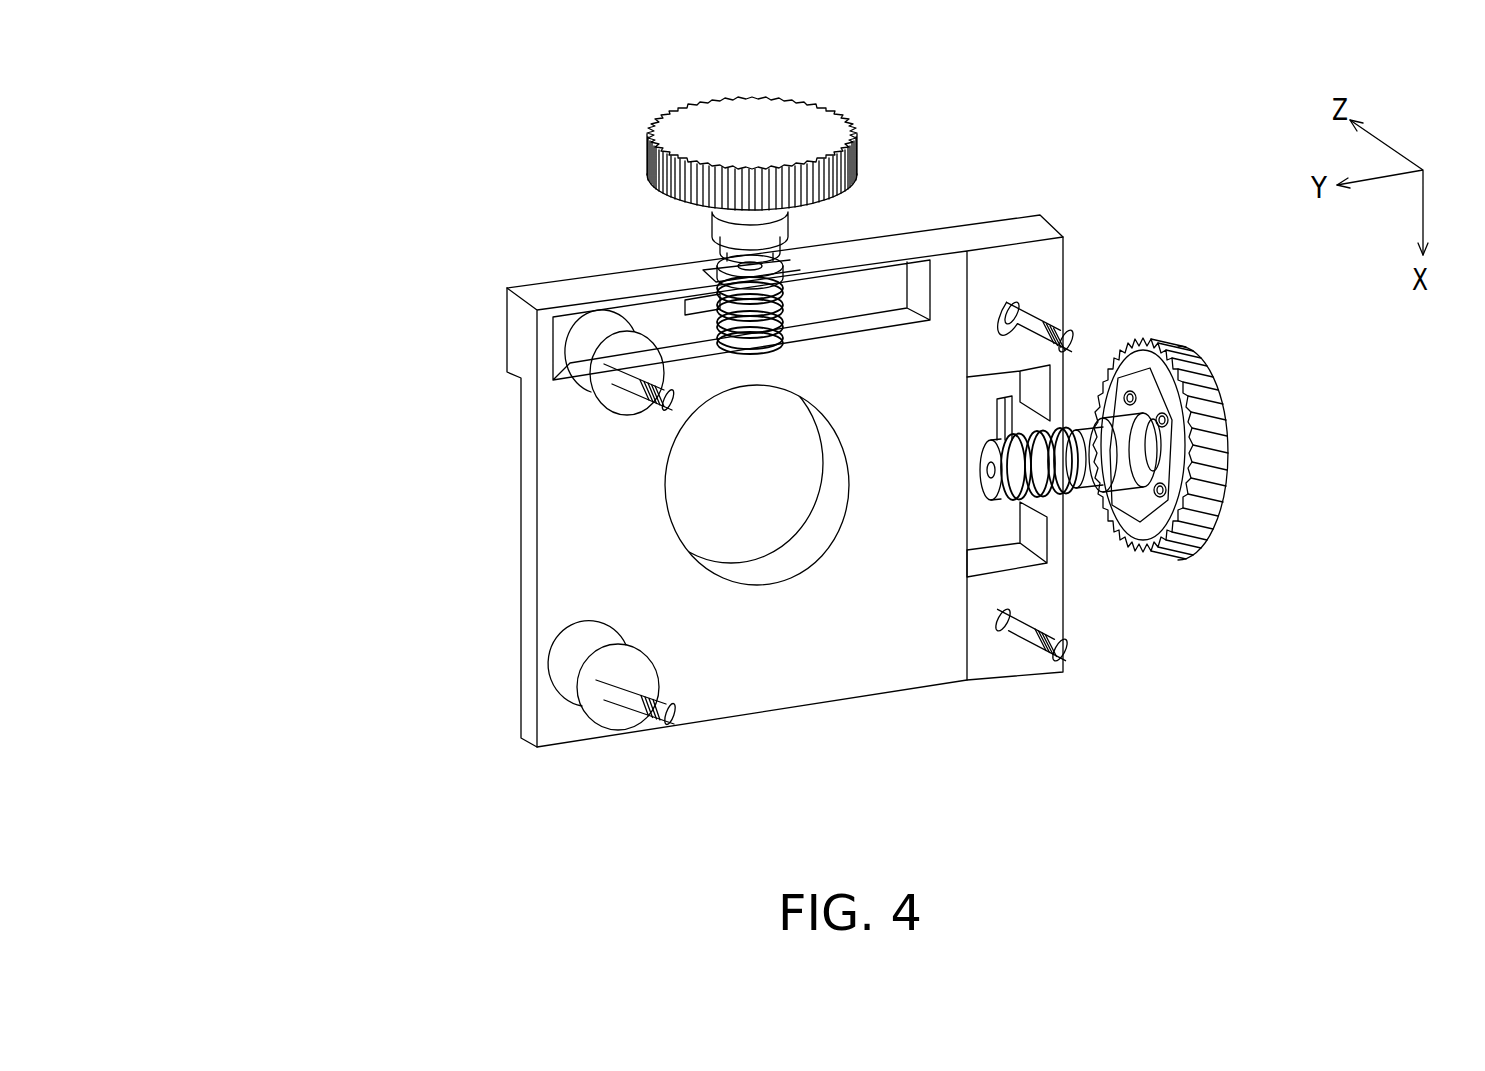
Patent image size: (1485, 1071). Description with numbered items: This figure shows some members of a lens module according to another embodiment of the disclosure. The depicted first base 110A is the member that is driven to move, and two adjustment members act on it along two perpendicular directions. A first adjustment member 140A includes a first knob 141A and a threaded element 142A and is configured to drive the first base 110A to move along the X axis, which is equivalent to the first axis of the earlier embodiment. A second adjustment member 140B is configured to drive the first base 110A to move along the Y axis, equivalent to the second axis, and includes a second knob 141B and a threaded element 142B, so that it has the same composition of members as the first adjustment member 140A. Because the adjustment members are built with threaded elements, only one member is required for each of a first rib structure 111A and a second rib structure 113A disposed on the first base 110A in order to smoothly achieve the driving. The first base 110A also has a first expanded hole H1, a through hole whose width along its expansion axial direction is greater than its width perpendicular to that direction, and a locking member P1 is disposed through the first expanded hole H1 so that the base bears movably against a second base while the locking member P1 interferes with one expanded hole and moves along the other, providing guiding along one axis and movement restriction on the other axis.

The first base 110A is at (520, 555).
The first rib structure 111A is at (687, 310).
The second rib structure 113A is at (993, 420).
The first adjustment member 140A is at (202, 55).
The first knob 141A is at (673, 103).
The threaded element 142A is at (768, 313).
The second adjustment member 140B is at (339, 55).
The second knob 141B is at (1218, 545).
The threaded element 142B is at (1062, 500).
The first expanded hole H1 is at (1040, 300).
The locking member P1 is at (1045, 318).